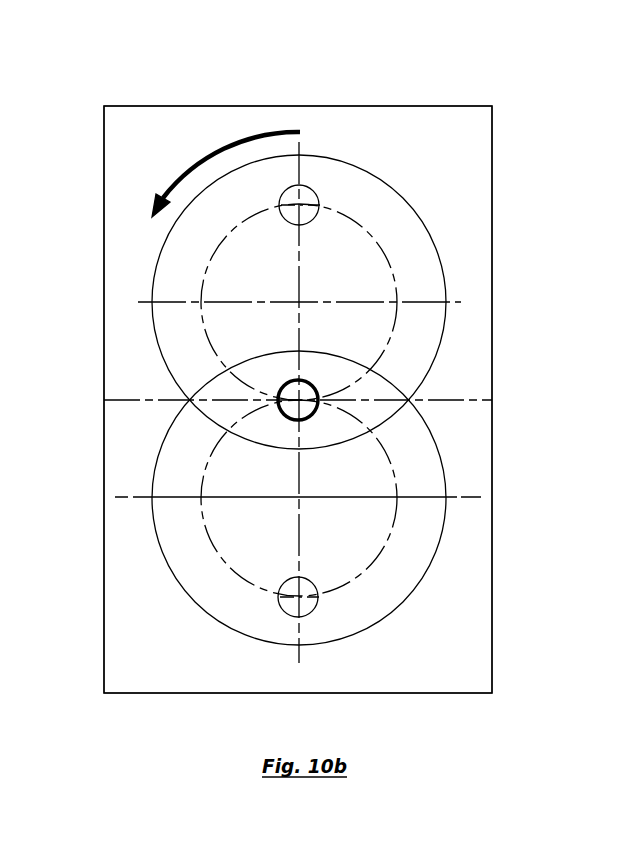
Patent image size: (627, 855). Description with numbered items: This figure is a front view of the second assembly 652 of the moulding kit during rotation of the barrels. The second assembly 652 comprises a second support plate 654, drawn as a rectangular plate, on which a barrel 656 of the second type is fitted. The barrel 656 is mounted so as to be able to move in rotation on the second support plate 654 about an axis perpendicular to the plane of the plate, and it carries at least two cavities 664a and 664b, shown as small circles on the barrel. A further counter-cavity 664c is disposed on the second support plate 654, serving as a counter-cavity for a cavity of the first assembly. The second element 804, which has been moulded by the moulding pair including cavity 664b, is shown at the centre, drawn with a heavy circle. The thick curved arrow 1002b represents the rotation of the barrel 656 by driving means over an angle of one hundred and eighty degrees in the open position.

The second assembly 652 is at (432, 73).
The second support plate 654 is at (475, 632).
The barrel of the second type 656 is at (423, 278).
The cavity 664a is at (317, 203).
The cavity 664b is at (321, 404).
The counter-cavity 664c is at (282, 608).
The second element 804 is at (284, 412).
The arrow 1002b is at (210, 174).